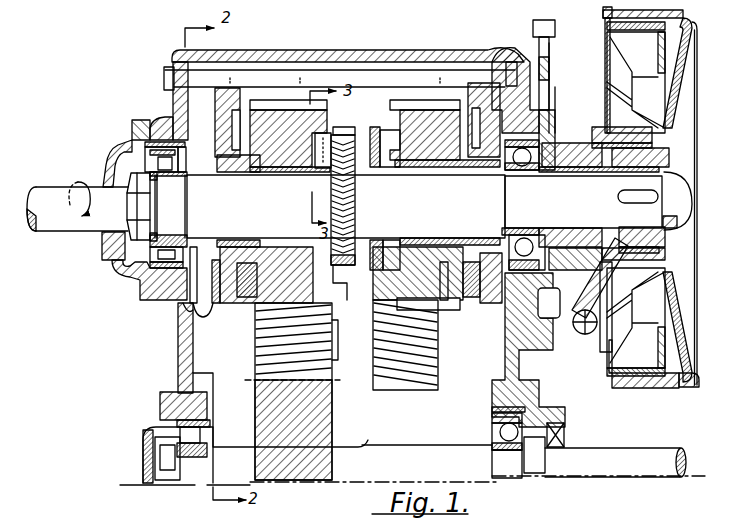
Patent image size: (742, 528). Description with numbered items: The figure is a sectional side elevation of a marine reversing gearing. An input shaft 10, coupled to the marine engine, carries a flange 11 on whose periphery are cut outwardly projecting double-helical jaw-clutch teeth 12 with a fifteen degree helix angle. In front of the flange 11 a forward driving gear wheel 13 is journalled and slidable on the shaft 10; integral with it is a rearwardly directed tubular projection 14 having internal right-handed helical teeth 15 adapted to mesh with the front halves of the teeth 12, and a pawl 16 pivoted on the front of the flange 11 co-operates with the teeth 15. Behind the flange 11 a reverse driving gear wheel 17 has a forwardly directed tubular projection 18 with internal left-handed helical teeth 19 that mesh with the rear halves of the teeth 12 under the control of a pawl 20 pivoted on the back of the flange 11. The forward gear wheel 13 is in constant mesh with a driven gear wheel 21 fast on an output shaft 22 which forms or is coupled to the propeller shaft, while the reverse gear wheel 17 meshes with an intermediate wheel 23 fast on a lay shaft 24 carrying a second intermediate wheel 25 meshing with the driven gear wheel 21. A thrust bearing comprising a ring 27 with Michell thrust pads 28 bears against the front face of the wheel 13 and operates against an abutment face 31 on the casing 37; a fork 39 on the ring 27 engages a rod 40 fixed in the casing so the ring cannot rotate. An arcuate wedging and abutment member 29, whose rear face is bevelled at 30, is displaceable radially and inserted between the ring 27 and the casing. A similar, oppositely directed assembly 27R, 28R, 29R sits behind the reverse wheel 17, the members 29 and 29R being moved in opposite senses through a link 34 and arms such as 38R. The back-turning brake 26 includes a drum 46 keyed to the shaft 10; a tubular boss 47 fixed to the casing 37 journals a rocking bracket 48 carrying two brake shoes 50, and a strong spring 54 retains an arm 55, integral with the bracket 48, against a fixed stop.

The input shaft 10 is at (52, 192).
The flange 11 is at (359, 194).
The jaw-clutch teeth 12 is at (357, 125).
The forward driving gear wheel 13 is at (273, 100).
The tubular projection 14 is at (343, 285).
The helical teeth 15 is at (338, 133).
The pawl 16 is at (321, 172).
The reverse driving gear wheel 17 is at (432, 100).
The tubular projection 18 is at (386, 128).
The helical teeth 19 is at (374, 125).
The pawl 20 is at (366, 243).
The driven gear wheel 21 is at (197, 368).
The output shaft 22 is at (610, 454).
The intermediate wheel 23 is at (438, 385).
The lay shaft 24 is at (345, 322).
The second intermediate wheel 25 is at (333, 365).
The back-turning brake 26 is at (657, 408).
The thrust ring 27 is at (245, 305).
The Michell thrust pads 28 is at (200, 313).
The wedging and abutment member 29 is at (226, 293).
The bevelled rear face 30 is at (188, 300).
The abutment face 31 is at (212, 285).
The link 34 is at (548, 58).
The casing 37 is at (162, 117).
The arm 38R is at (552, 89).
The fork 39 is at (224, 62).
The rod 40 is at (320, 75).
The drum 46 is at (693, 388).
The tubular boss 47 is at (619, 228).
The rocking bracket 48 is at (602, 132).
The brake shoes 50 is at (612, 35).
The spring 54 is at (592, 340).
The arm 55 is at (594, 288).
The thrust ring 27R is at (492, 305).
The thrust pads 28R is at (456, 300).
The wedging and abutment member 29R is at (542, 296).